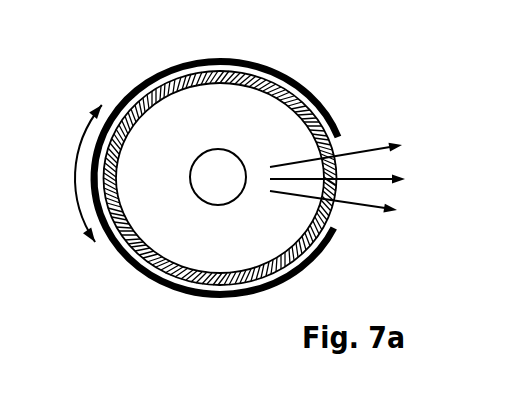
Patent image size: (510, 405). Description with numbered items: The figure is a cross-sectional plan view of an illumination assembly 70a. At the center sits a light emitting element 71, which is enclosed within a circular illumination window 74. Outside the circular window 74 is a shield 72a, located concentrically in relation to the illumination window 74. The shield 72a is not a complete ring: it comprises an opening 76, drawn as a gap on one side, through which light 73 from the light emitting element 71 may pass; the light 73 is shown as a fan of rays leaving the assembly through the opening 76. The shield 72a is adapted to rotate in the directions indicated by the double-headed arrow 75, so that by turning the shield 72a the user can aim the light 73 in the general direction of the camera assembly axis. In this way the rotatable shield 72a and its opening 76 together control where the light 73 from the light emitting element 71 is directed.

The illumination assembly 70a is at (117, 57).
The light emitting element 71 is at (218, 177).
The shield 72a is at (298, 85).
The light 73 is at (353, 178).
The circular illumination window 74 is at (258, 268).
The arrow 75 is at (75, 173).
The opening 76 is at (344, 188).